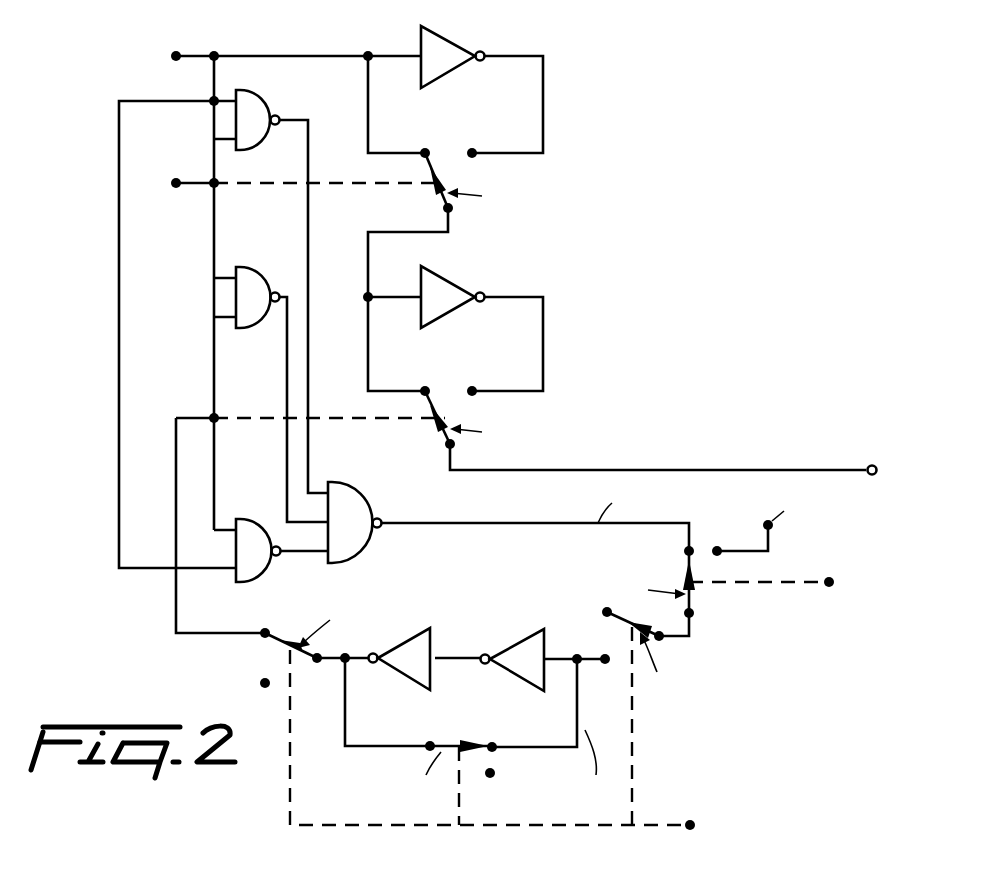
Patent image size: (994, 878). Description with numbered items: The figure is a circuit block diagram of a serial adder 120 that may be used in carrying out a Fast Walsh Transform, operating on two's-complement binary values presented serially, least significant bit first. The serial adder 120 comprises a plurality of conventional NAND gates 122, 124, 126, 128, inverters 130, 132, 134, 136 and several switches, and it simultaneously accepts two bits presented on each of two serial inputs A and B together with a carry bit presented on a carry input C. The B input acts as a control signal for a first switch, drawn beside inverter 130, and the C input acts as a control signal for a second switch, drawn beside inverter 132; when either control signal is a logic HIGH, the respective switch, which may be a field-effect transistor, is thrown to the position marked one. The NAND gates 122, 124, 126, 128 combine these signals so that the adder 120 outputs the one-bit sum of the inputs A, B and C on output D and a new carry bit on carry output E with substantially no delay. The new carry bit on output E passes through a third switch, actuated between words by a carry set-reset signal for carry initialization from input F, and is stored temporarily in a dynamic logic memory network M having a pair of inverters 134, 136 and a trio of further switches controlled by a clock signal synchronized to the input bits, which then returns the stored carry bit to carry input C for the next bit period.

The serial adder 120 is at (603, 219).
The NAND gate 122 is at (267, 110).
The NAND gate 124 is at (256, 271).
The NAND gate 126 is at (246, 517).
The NAND gate 128 is at (366, 497).
The inverter 130 is at (444, 73).
The inverter 132 is at (444, 313).
The inverter 134 is at (410, 633).
The inverter 136 is at (522, 637).